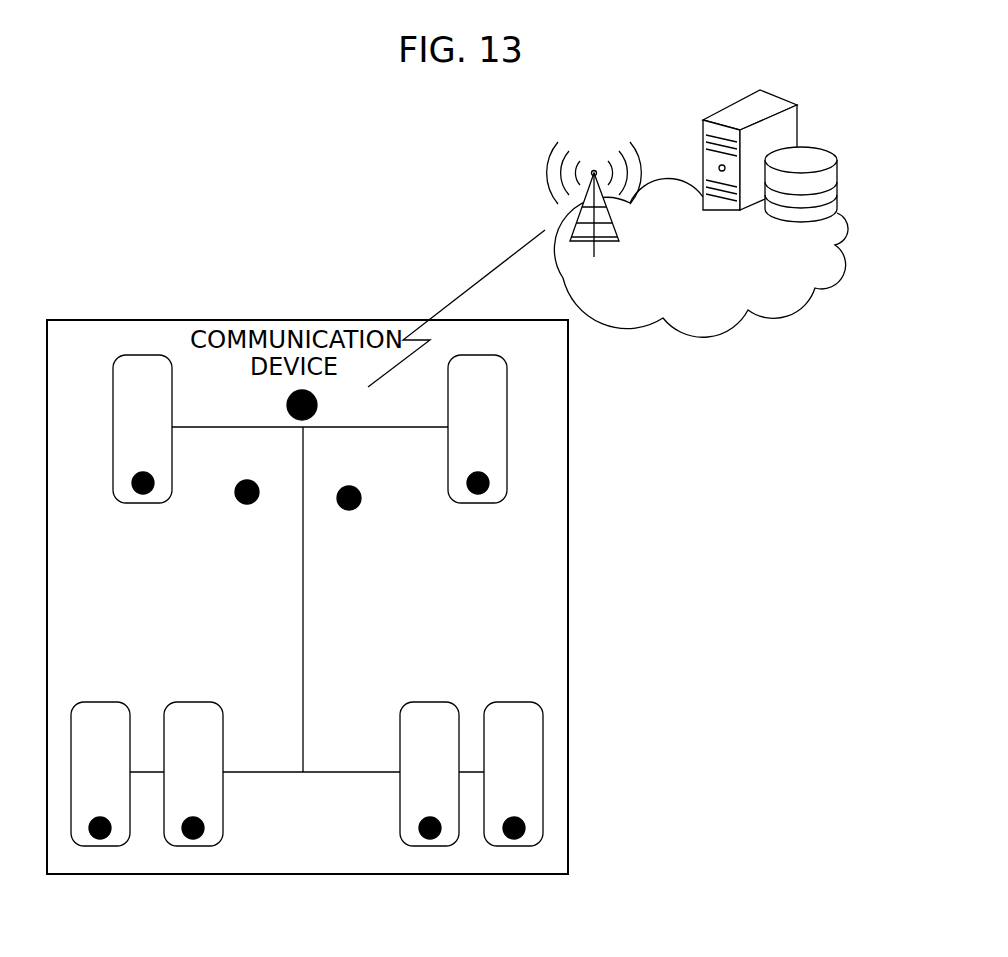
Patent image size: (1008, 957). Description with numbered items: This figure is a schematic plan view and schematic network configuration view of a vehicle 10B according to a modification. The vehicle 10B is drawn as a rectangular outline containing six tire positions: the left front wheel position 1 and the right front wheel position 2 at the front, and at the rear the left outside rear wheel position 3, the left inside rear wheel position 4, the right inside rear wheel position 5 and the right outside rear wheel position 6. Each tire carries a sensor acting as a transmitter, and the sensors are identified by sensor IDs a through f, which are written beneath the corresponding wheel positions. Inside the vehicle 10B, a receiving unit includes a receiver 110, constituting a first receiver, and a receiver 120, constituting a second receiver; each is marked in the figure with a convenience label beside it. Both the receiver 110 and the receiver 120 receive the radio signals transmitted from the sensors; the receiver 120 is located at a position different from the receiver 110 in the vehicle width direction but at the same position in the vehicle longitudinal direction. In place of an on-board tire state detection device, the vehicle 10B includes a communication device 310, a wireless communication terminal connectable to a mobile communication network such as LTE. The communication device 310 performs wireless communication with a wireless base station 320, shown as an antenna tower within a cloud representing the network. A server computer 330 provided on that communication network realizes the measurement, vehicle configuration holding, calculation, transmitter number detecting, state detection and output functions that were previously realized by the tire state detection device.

The vehicle 10B is at (568, 565).
The receiver 110 is at (246, 504).
The receiver 120 is at (349, 511).
The communication device 310 is at (317, 405).
The wireless base station 320 is at (613, 227).
The server computer 330 is at (797, 120).
The left front wheel position 1 is at (142, 426).
The right front wheel position 2 is at (477, 430).
The left outside rear wheel position 3 is at (100, 774).
The left inside rear wheel position 4 is at (193, 774).
The right inside rear wheel position 5 is at (429, 774).
The right outside rear wheel position 6 is at (513, 774).